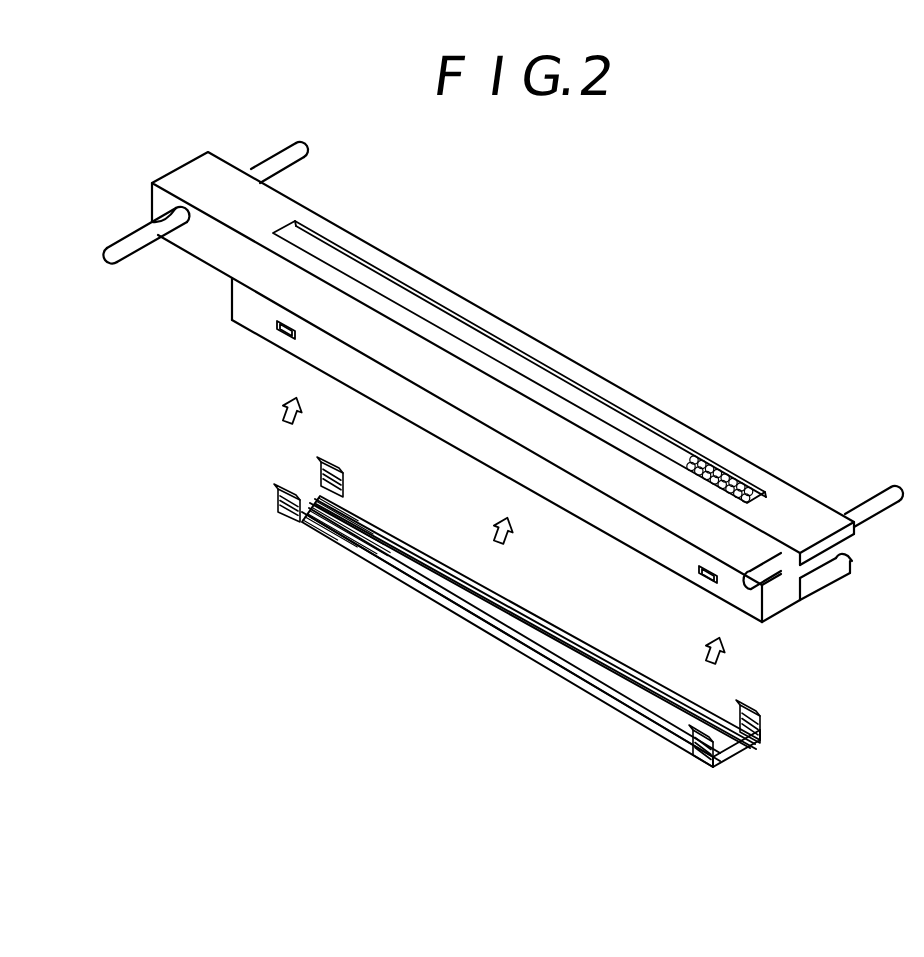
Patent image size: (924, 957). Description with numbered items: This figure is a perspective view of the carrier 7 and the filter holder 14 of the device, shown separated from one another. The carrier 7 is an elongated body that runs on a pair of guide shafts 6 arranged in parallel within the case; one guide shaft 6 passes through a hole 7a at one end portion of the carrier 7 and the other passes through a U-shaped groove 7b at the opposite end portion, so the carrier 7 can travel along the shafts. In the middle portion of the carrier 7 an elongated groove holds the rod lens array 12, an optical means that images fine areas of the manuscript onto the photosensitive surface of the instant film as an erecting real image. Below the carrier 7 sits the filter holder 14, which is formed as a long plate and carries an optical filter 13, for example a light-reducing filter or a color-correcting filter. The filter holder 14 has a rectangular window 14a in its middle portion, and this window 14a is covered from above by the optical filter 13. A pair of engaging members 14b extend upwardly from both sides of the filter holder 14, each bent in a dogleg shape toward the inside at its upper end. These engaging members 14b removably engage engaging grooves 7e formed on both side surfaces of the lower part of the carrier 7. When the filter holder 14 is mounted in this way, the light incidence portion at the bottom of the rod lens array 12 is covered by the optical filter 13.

The guide shaft 6 is at (268, 160).
The carrier 7 is at (648, 398).
The hole 7a is at (142, 230).
The U-shaped groove 7b is at (852, 566).
The engaging groove 7e is at (278, 332).
The rod lens array 12 is at (712, 462).
The optical filter 13 is at (618, 675).
The filter holder 14 is at (567, 681).
The rectangular window 14a is at (524, 652).
The engaging member 14b is at (345, 482).